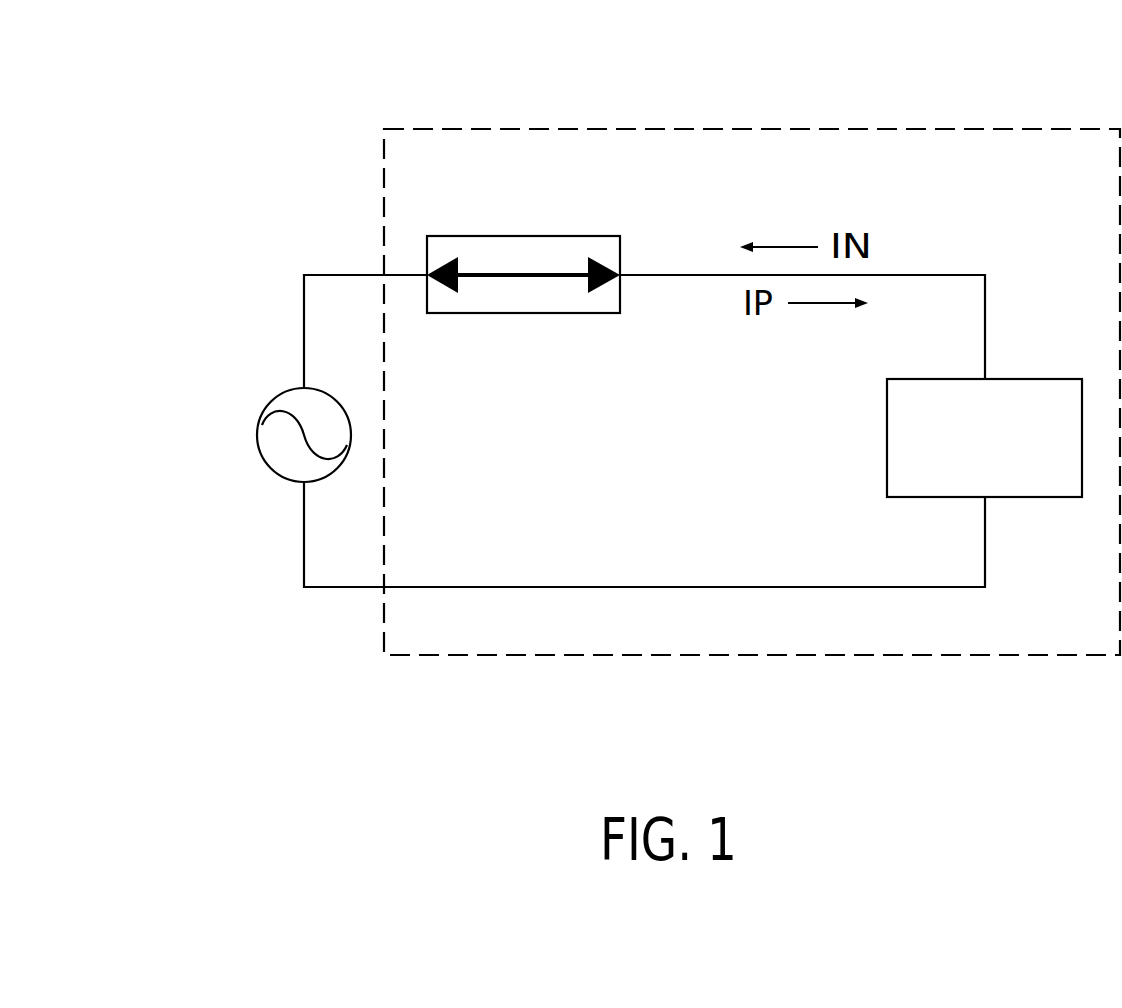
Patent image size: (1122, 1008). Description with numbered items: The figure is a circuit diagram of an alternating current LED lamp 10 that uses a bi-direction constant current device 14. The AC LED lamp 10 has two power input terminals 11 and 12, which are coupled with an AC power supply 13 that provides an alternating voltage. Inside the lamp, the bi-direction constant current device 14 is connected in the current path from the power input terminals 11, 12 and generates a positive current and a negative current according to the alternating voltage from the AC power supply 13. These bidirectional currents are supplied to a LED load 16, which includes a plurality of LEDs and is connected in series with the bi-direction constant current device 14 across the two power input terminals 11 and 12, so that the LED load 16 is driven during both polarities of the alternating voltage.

The AC LED lamp 10 is at (750, 128).
The power input terminal 11 is at (343, 274).
The power input terminal 12 is at (345, 587).
The AC power supply 13 is at (275, 475).
The bi-direction constant current device 14 is at (523, 236).
The LED load 16 is at (1025, 379).